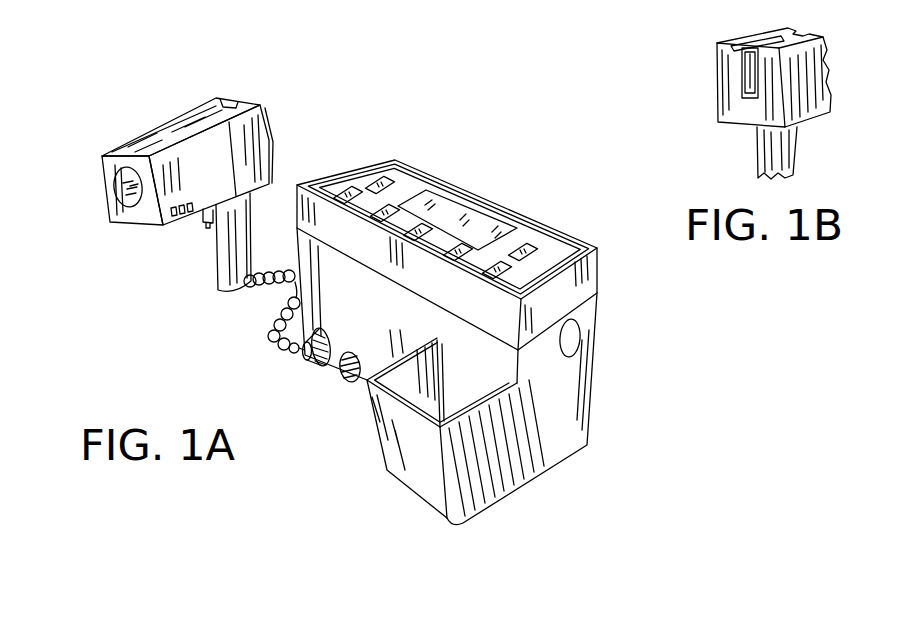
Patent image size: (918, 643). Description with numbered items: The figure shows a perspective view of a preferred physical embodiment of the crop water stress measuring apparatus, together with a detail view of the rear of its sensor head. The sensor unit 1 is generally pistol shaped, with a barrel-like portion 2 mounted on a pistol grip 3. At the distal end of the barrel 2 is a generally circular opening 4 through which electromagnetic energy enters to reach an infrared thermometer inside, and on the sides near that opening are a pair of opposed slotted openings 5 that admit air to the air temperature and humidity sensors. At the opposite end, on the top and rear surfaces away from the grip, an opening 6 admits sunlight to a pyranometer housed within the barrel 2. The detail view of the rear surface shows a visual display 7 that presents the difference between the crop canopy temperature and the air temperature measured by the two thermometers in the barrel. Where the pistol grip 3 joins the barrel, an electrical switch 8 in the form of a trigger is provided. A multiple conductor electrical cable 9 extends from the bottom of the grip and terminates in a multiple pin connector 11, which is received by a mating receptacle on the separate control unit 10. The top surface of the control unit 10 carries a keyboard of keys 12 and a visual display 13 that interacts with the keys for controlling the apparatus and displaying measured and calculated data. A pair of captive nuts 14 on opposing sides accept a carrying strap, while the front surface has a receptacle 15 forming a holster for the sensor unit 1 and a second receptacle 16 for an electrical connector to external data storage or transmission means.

In FIG. 1A, the sensor unit 1 is at (100, 253).
In FIG. 1A, the barrel-like portion 2 is at (163, 128).
In FIG. 1B, the barrel-like portion 2 is at (713, 115).
In FIG. 1A, the pistol grip 3 is at (210, 267).
In FIG. 1B, the pistol grip 3 is at (797, 133).
In FIG. 1A, the circular opening 4 is at (120, 177).
In FIG. 1A, the slotted openings 5 is at (190, 200).
In FIG. 1A, the opening 6 is at (230, 102).
In FIG. 1B, the opening 6 is at (757, 43).
In FIG. 1B, the visual display 7 is at (740, 72).
In FIG. 1A, the electrical switch 8 is at (207, 218).
In FIG. 1A, the multiple conductor electrical cable 9 is at (270, 330).
In FIG. 1A, the control unit 10 is at (618, 368).
In FIG. 1A, the multiple pin connector 11 is at (306, 363).
In FIG. 1A, the keys 12 is at (377, 183).
In FIG. 1A, the visual display 13 is at (473, 222).
In FIG. 1A, the captive nuts 14 is at (570, 335).
In FIG. 1A, the receptacle 15 is at (455, 388).
In FIG. 1A, the second receptacle 16 is at (350, 378).